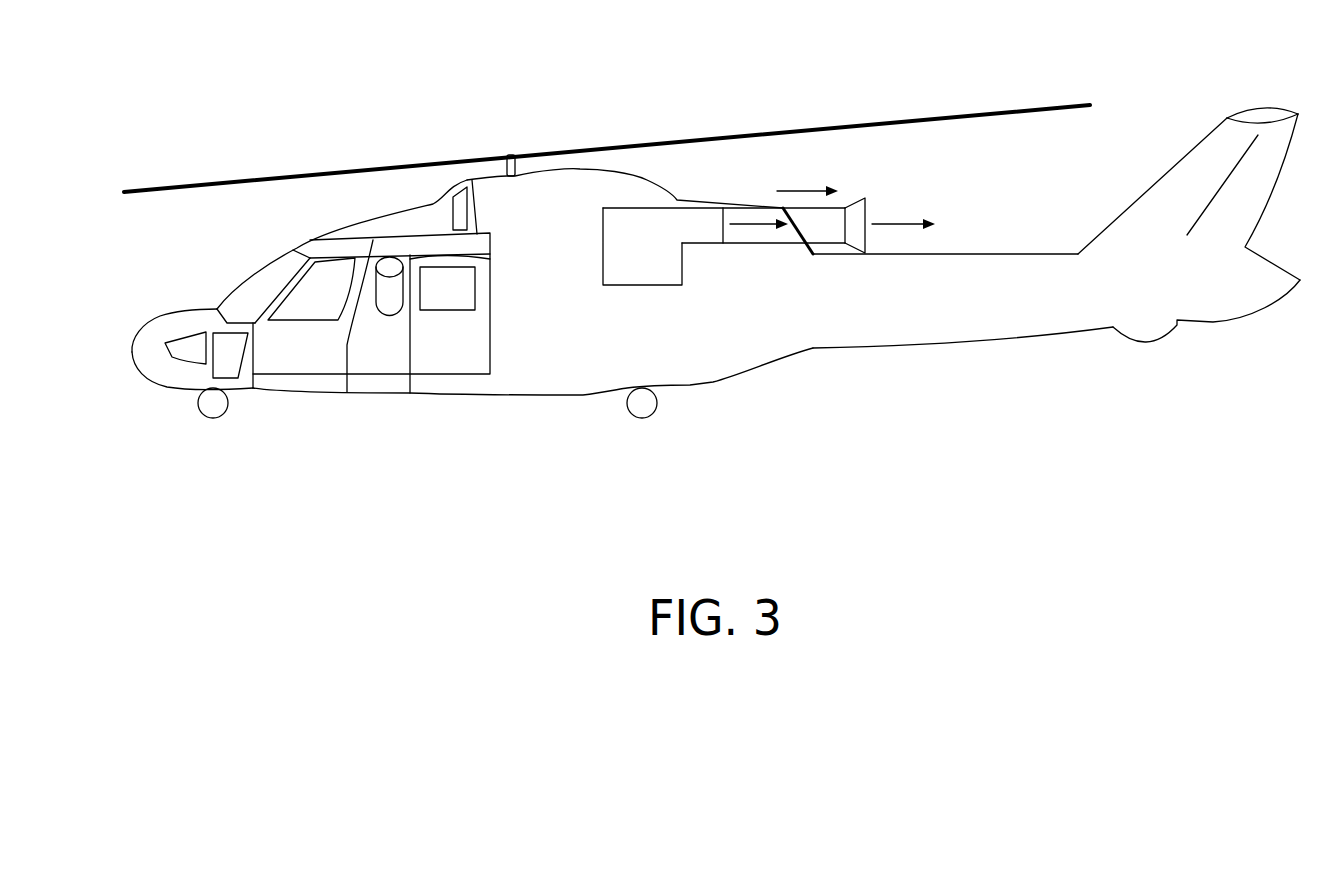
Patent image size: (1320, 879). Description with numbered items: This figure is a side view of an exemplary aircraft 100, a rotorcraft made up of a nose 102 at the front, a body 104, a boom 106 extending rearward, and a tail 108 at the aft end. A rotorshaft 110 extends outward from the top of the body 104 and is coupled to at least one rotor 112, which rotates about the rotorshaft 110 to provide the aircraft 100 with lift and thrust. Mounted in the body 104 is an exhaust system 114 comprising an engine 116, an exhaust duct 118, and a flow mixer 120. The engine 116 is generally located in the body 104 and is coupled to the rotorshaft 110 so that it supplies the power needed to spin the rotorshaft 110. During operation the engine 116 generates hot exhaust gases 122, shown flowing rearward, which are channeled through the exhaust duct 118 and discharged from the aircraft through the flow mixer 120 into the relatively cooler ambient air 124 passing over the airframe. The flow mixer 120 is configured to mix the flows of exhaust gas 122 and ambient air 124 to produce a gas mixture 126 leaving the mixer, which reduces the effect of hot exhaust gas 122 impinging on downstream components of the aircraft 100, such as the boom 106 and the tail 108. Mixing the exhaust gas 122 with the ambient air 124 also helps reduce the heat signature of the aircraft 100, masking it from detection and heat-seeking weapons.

The aircraft 100 is at (706, 84).
The nose 102 is at (142, 373).
The body 104 is at (528, 383).
The boom 106 is at (1032, 330).
The tail 108 is at (1222, 140).
The rotorshaft 110 is at (515, 165).
The rotor 112 is at (364, 171).
The exhaust system 114 is at (848, 166).
The engine 116 is at (665, 258).
The exhaust duct 118 is at (821, 244).
The flow mixer 120 is at (856, 253).
The exhaust gases 122 is at (750, 226).
The ambient air 124 is at (808, 191).
The gas mixture 126 is at (891, 224).